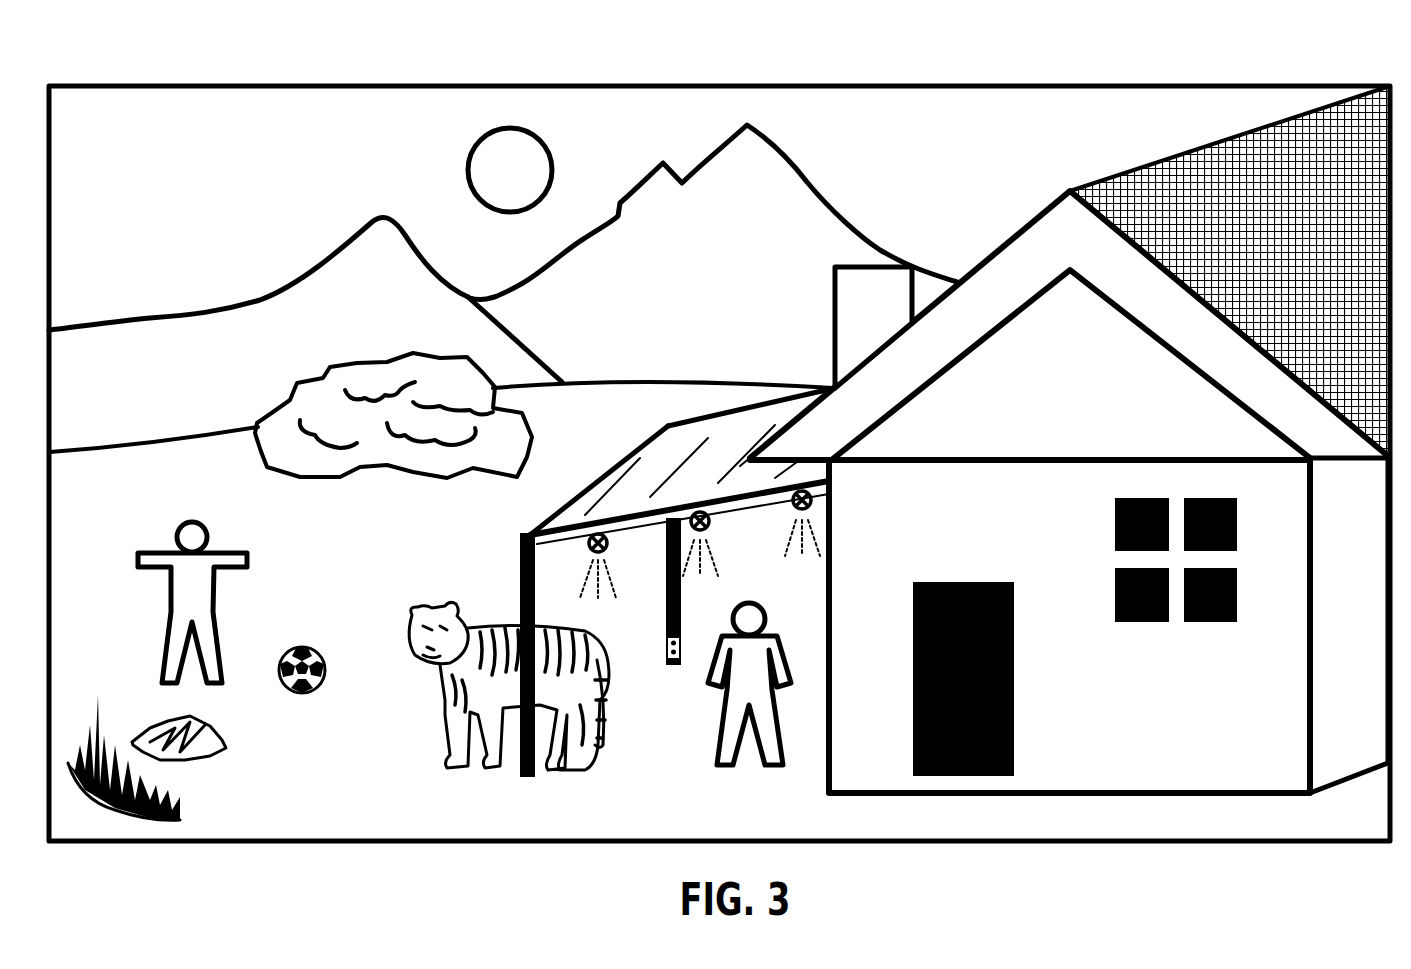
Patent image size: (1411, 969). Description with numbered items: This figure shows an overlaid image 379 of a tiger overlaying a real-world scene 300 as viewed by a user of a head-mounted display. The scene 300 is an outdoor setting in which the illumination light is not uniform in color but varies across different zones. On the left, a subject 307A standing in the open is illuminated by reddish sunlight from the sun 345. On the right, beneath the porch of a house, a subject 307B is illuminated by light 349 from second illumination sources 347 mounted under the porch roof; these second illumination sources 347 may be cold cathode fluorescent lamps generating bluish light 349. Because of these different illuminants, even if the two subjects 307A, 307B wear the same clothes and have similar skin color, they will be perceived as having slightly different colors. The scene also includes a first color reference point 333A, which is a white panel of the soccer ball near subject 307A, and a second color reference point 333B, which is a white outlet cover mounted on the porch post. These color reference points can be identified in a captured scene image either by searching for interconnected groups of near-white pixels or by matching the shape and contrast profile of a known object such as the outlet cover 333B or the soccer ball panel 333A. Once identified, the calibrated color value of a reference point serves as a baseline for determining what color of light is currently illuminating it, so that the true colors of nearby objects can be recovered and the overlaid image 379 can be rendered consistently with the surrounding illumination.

The real-world scene 300 is at (1333, 32).
The sun 345 is at (475, 143).
The subject 307A is at (166, 550).
The subject 307B is at (718, 748).
The first color reference point 333A is at (293, 692).
The second color reference point 333B is at (668, 644).
The overlaid image 379 is at (435, 606).
The second illumination sources 347 is at (709, 521).
The light 349 is at (738, 549).